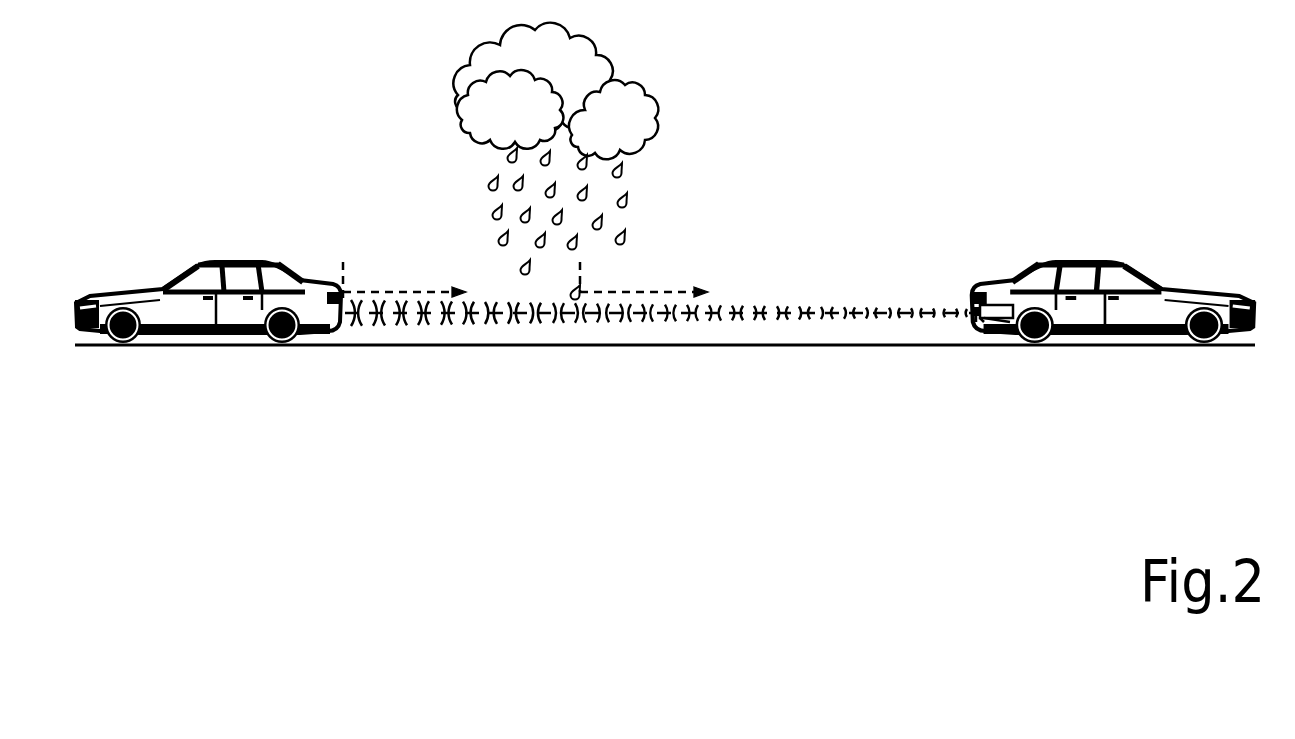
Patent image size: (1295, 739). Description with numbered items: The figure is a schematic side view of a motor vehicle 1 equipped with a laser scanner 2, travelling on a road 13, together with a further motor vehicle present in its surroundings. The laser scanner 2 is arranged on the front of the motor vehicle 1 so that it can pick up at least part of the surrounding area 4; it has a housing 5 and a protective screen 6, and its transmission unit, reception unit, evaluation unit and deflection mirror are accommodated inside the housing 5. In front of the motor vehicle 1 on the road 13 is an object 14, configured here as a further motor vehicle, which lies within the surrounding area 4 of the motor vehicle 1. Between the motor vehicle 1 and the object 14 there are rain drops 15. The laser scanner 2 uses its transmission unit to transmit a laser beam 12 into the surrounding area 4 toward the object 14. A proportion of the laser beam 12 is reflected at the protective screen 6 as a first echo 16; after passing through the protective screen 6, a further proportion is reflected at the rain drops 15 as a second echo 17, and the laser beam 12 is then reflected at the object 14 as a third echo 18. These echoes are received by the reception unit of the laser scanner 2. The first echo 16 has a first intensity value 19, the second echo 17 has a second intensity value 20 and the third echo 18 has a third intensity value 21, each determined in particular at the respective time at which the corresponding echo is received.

The motor vehicle 1 is at (1205, 275).
The laser scanner 2 is at (974, 290).
The surrounding area 4 is at (842, 296).
The housing 5 is at (1000, 322).
The protective screen 6 is at (972, 322).
The laser beam 12 is at (765, 320).
The road 13 is at (838, 348).
The object 14 is at (245, 262).
The rain drops 15 is at (470, 186).
The first echo 16 is at (972, 322).
The second echo 17 is at (660, 292).
The third echo 18 is at (373, 292).
The first intensity value 19 is at (982, 320).
The second intensity value 20 is at (700, 270).
The third intensity value 21 is at (454, 271).